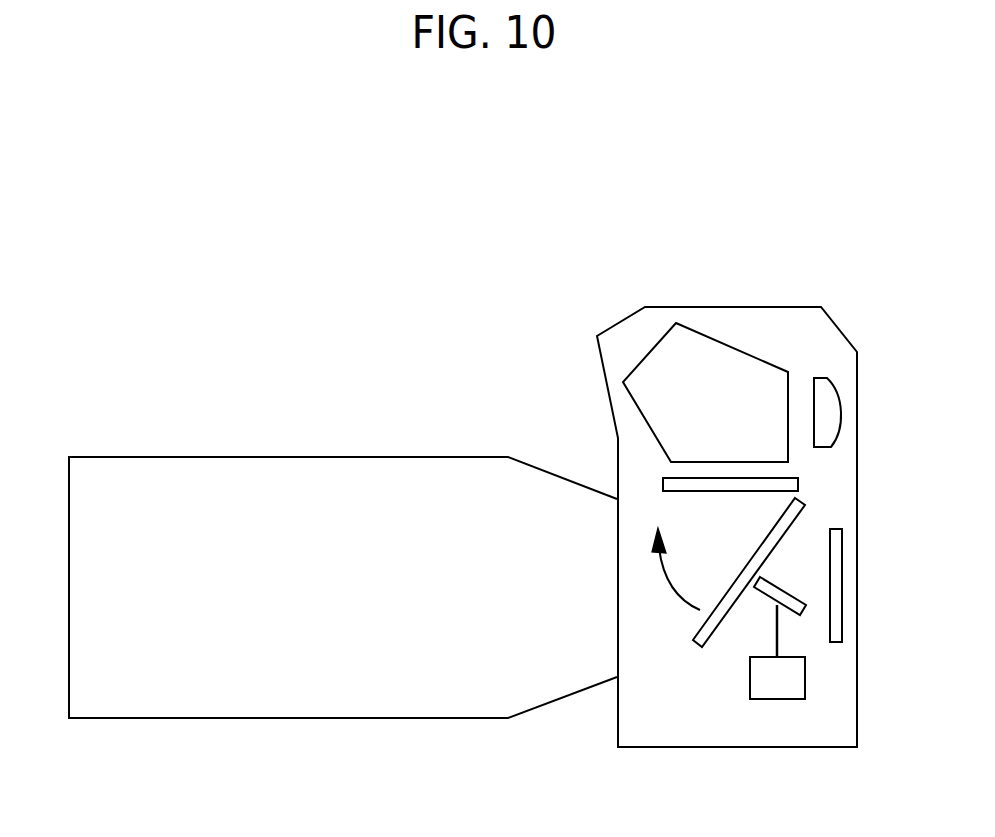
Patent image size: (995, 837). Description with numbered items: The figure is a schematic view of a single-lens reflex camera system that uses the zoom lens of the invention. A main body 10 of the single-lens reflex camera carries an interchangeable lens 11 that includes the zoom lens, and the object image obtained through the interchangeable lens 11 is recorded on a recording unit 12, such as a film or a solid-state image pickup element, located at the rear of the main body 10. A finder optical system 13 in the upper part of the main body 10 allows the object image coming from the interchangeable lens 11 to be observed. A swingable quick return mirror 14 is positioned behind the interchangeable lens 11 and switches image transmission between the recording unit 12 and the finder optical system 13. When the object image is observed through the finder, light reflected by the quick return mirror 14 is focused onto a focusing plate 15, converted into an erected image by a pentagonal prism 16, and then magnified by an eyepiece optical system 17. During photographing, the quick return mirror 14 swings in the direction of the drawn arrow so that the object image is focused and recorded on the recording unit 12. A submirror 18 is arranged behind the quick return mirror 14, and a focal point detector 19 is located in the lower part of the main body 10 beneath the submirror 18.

The main body 10 is at (833, 733).
The interchangeable lens 11 is at (314, 470).
The recording unit 12 is at (838, 572).
The finder optical system 13 is at (878, 230).
The quick return mirror 14 is at (702, 646).
The focusing plate 15 is at (684, 482).
The pentagonal prism 16 is at (710, 351).
The eyepiece optical system 17 is at (822, 376).
The submirror 18 is at (767, 580).
The focal point detector 19 is at (801, 687).